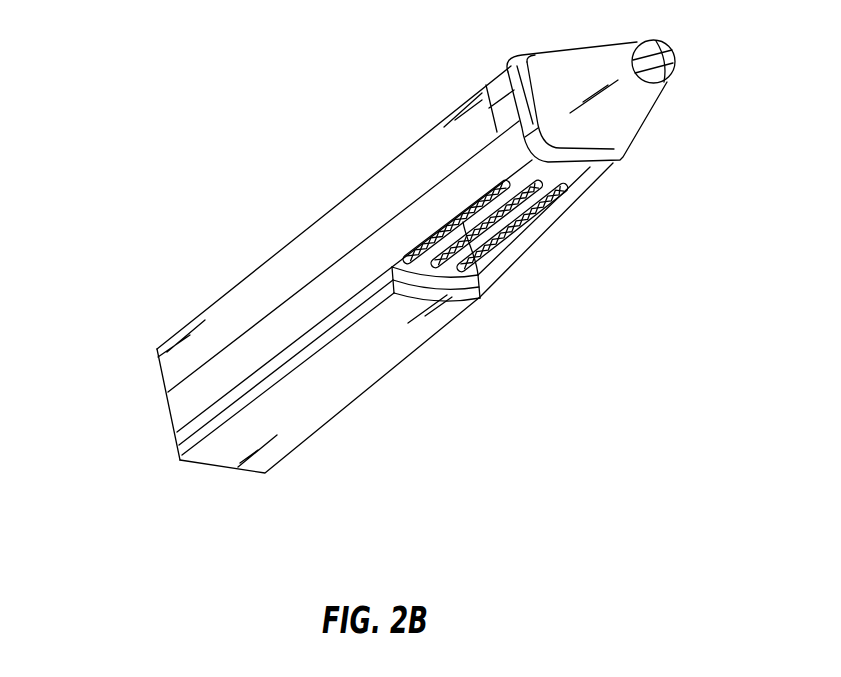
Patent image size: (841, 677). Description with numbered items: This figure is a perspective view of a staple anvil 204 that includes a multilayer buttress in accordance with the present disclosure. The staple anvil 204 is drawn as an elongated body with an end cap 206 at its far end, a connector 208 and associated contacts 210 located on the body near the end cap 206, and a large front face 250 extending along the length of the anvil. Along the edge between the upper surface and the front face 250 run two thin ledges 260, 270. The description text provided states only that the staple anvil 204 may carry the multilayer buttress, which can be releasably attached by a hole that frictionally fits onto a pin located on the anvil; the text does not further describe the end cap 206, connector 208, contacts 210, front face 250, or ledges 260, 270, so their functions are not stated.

The staple anvil 204 is at (282, 244).
The end cap 206 is at (593, 174).
The connector 208 is at (478, 276).
The connector contacts 210 is at (516, 207).
The front face 250 is at (356, 384).
The ledge 260 is at (183, 446).
The ledge 270 is at (183, 452).